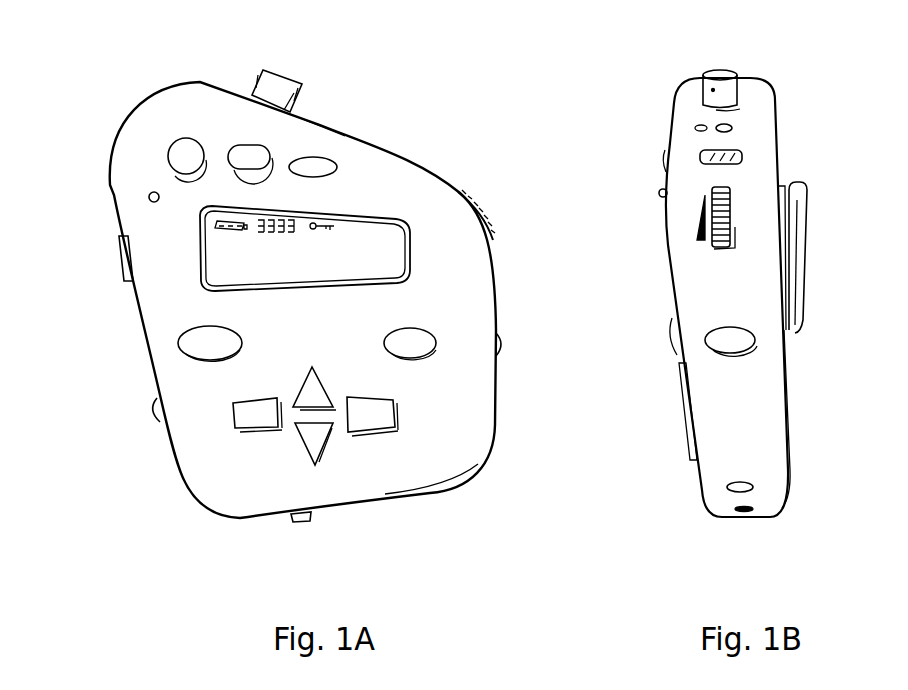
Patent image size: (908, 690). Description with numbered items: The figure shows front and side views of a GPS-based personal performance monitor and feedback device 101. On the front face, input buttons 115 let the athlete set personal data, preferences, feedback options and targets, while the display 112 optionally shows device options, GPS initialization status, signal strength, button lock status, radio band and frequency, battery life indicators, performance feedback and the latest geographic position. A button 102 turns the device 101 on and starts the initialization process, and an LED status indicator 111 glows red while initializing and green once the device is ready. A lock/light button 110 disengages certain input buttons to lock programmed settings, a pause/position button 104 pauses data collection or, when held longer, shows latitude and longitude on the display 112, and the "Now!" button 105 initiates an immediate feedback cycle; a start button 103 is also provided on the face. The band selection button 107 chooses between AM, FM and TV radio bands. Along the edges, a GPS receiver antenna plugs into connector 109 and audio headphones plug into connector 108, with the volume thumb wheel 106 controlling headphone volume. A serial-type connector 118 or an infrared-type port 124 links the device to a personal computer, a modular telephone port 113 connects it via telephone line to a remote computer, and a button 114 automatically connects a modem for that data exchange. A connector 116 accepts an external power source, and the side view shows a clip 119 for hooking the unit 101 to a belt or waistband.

In FIG. 1A, the GPS-based personal performance monitor and feedback device 101 is at (350, 300).
In FIG. 1B, the GPS-based personal performance monitor and feedback device 101 is at (726, 297).
In FIG. 1A, the button 102 is at (112, 141).
In FIG. 1A, the start button 103 is at (136, 362).
In FIG. 1A, the pause/position button 104 is at (492, 381).
In FIG. 1A, the "Now!" button 105 is at (542, 350).
In FIG. 1B, the "Now!" button 105 is at (787, 366).
In FIG. 1A, the volume thumb wheel 106 is at (518, 206).
In FIG. 1B, the volume thumb wheel 106 is at (667, 236).
In FIG. 1A, the band selection button 107 is at (410, 153).
In FIG. 1A, the connector 108 is at (383, 117).
In FIG. 1B, the connector 108 is at (785, 102).
In FIG. 1A, the connector 109 is at (226, 64).
In FIG. 1B, the connector 109 is at (764, 67).
In FIG. 1A, the lock/light button 110 is at (181, 119).
In FIG. 1A, the LED status indicator 111 is at (87, 178).
In FIG. 1B, the LED status indicator 111 is at (626, 173).
In FIG. 1A, the display 112 is at (206, 246).
In FIG. 1A, the RJ-11-type telephone port 113 is at (74, 272).
In FIG. 1A, the button 114 is at (100, 428).
In FIG. 1A, the input buttons 115 is at (249, 459).
In FIG. 1A, the connector 116 is at (331, 537).
In FIG. 1B, the connector 116 is at (694, 538).
In FIG. 1A, the serial-type connector 118 is at (459, 515).
In FIG. 1B, the serial-type connector 118 is at (794, 507).
In FIG. 1B, the clip 119 is at (828, 243).
In FIG. 1B, the infrared-type port 124 is at (787, 138).